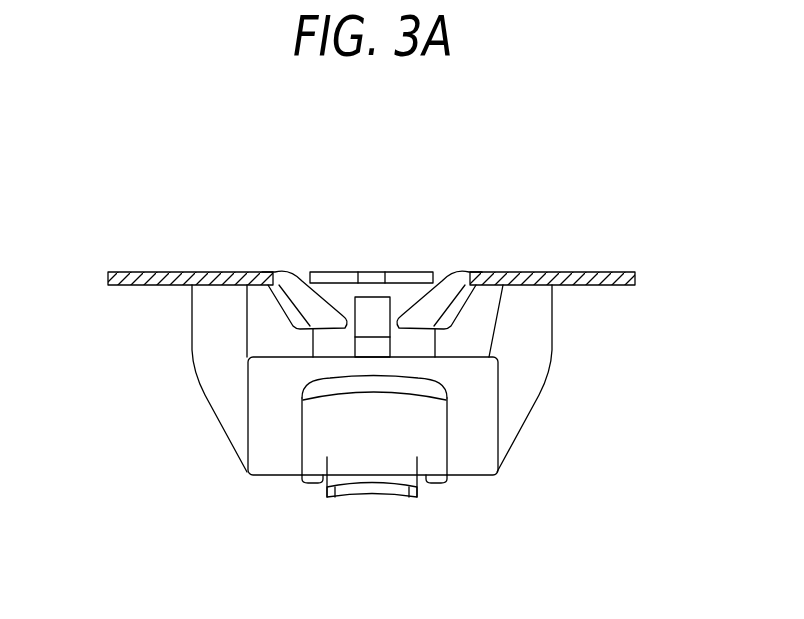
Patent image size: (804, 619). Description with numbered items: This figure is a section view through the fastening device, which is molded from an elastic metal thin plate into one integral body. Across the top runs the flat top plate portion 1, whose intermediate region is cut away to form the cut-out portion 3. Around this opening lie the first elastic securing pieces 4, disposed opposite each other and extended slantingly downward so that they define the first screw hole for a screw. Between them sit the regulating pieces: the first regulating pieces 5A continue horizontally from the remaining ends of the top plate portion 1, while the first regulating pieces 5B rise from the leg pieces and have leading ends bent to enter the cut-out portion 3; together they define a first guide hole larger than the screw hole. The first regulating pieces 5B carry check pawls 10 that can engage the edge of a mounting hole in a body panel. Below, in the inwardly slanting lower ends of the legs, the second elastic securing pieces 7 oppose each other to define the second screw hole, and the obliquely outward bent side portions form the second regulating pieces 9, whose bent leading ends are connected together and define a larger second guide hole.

The top plate portion 1 is at (127, 272).
The cut-out portion 3 is at (403, 298).
The first elastic securing pieces 4 is at (288, 318).
The first regulating pieces 5A is at (267, 271).
The first regulating pieces 5B is at (370, 272).
The second elastic securing pieces 7 is at (373, 484).
The second regulating pieces 9 is at (268, 413).
The check pawls 10 is at (363, 312).